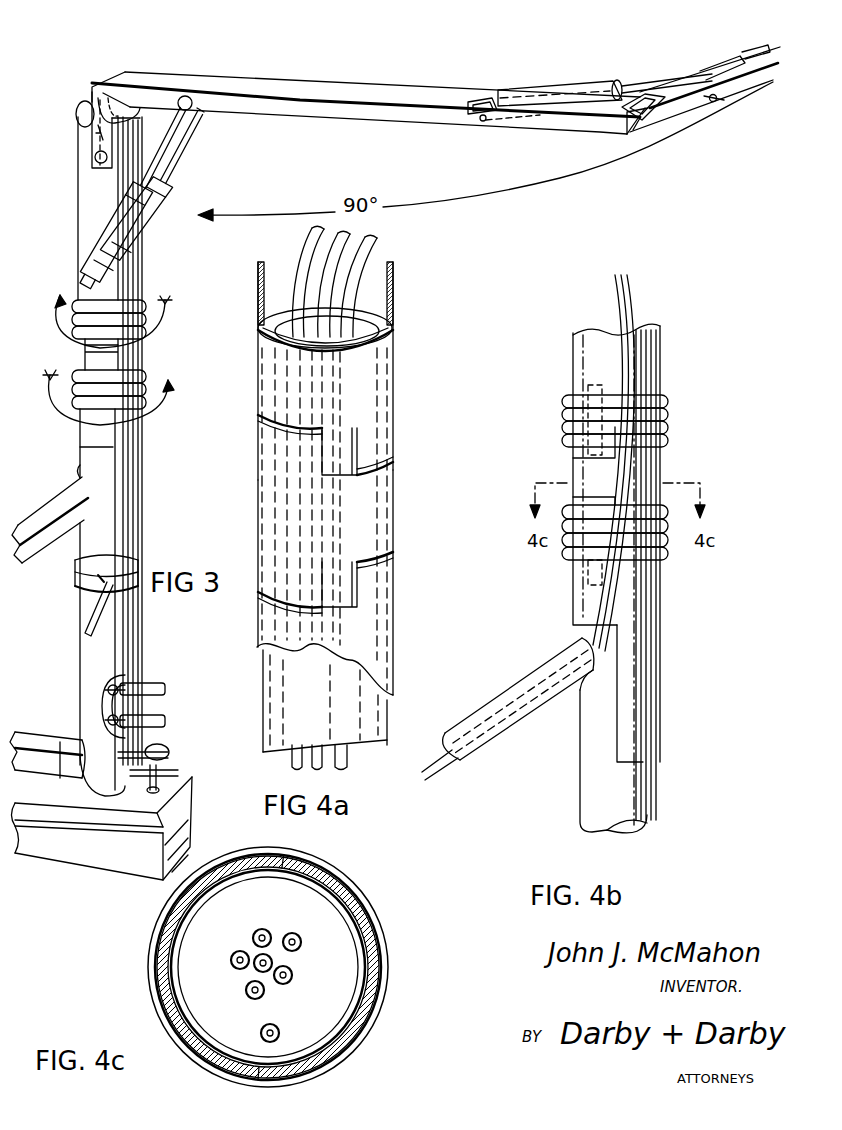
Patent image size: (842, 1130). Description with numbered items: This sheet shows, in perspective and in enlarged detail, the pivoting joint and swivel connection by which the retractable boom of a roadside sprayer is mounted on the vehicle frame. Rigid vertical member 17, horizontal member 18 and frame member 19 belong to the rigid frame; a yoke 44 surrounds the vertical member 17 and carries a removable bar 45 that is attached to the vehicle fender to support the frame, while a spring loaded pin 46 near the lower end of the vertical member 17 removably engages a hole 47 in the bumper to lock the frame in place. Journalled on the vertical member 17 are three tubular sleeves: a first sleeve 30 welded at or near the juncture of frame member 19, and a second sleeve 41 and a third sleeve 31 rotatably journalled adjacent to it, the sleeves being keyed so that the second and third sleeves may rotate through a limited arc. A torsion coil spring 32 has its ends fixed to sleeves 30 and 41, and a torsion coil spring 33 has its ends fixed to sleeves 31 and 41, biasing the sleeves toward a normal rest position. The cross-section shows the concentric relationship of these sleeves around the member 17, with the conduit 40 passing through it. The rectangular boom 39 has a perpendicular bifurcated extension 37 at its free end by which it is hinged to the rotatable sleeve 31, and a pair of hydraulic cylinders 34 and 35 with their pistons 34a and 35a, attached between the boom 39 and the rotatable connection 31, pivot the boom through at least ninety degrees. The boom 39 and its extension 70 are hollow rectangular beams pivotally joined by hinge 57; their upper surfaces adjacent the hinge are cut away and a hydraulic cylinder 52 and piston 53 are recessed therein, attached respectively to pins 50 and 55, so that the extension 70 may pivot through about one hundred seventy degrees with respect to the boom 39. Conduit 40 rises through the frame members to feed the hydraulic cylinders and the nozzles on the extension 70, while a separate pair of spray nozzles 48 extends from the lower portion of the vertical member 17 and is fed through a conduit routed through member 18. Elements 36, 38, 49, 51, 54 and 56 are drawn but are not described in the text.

In FIG. 3, the vertical member 17 is at (87, 607).
In FIG. 4a, the vertical member 17 is at (397, 307).
In FIG. 4c, the vertical member 17 is at (297, 933).
In FIG. 3, the horizontal member 18 is at (55, 742).
In FIG. 3, the frame member 19 is at (55, 512).
In FIG. 4b, the frame member 19 is at (517, 688).
In FIG. 3, the first sleeve 30 is at (90, 434).
In FIG. 4a, the first sleeve 30 is at (268, 637).
In FIG. 4b, the first sleeve 30 is at (647, 666).
In FIG. 4c, the first sleeve 30 is at (157, 963).
In FIG. 3, the swivel connection (third sleeve) 31 is at (86, 208).
In FIG. 4a, the swivel connection (third sleeve) 31 is at (362, 391).
In FIG. 4b, the swivel connection (third sleeve) 31 is at (657, 366).
In FIG. 3, the torsion coil spring 32 is at (75, 378).
In FIG. 4b, the torsion coil spring 32 is at (566, 560).
In FIG. 4c, the torsion coil spring 32 is at (380, 946).
In FIG. 3, the torsion coil spring 33 is at (75, 318).
In FIG. 4b, the torsion coil spring 33 is at (565, 400).
In FIG. 3, the hydraulic cylinder 34 is at (104, 248).
In FIG. 3, the piston 34a is at (178, 132).
In FIG. 3, the hydraulic cylinder 35 is at (150, 225).
In FIG. 3, the piston 35a is at (178, 160).
In FIG. 3, the mounting bracket 36 is at (96, 166).
In FIG. 3, the bifurcated extension 37 is at (92, 133).
In FIG. 3, the pivot pin 38 is at (178, 97).
In FIG. 3, the retractable boom 39 is at (272, 88).
In FIG. 3, the conduit 40 is at (98, 98).
In FIG. 4a, the conduit 40 is at (378, 243).
In FIG. 4b, the conduit 40 is at (630, 303).
In FIG. 4c, the conduit 40 is at (375, 880).
In FIG. 3, the second sleeve 41 is at (137, 348).
In FIG. 4a, the second sleeve 41 is at (393, 510).
In FIG. 4b, the second sleeve 41 is at (645, 473).
In FIG. 4c, the second sleeve 41 is at (357, 922).
In FIG. 3, the yoke 44 is at (137, 577).
In FIG. 3, the bar 45 is at (100, 612).
In FIG. 3, the spring loaded pin 46 is at (160, 750).
In FIG. 3, the hole 47 is at (165, 775).
In FIG. 3, the spray nozzles 48 is at (163, 686).
In FIG. 3, the base plate 49 is at (118, 878).
In FIG. 3, the pin 50 is at (483, 122).
In FIG. 3, the bracket 51 is at (478, 98).
In FIG. 3, the hydraulic cylinder 52 is at (548, 90).
In FIG. 3, the piston 53 is at (620, 81).
In FIG. 3, the link 54 is at (717, 71).
In FIG. 3, the pin 55 is at (713, 102).
In FIG. 3, the arm tip 56 is at (763, 62).
In FIG. 3, the hinge 57 is at (630, 127).
In FIG. 3, the extension 70 is at (748, 90).